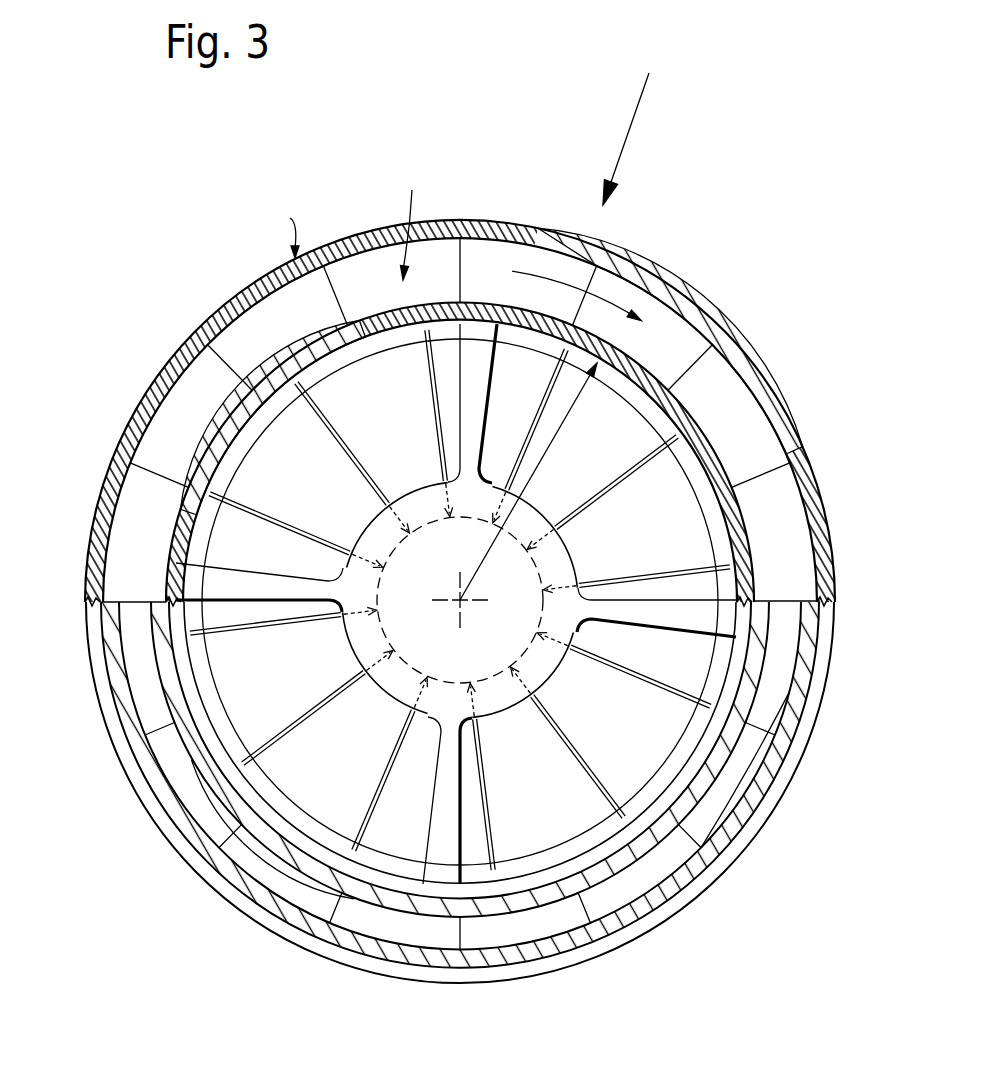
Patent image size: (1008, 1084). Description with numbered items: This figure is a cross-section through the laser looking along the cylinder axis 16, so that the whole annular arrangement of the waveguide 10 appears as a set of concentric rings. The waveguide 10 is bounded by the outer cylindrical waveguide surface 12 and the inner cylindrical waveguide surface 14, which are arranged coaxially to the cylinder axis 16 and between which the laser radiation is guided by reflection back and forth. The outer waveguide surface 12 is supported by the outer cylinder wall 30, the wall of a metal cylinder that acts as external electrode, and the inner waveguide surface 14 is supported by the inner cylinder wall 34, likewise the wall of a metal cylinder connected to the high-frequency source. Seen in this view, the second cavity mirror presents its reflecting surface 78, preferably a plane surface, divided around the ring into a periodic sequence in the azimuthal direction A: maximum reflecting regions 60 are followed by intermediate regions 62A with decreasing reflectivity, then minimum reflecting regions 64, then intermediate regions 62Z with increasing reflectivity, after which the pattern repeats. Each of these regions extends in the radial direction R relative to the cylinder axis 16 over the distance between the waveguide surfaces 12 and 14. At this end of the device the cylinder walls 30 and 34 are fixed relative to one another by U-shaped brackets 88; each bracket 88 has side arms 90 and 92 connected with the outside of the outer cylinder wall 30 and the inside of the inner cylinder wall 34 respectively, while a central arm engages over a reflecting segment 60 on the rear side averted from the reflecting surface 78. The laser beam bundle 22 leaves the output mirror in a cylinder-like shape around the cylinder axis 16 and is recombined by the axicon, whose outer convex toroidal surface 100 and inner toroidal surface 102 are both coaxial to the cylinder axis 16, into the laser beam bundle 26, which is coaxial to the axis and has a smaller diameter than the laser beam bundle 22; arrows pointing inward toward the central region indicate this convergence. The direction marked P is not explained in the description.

The waveguide 10 is at (142, 780).
The outer cylindrical waveguide surface 12 is at (307, 907).
The inner cylindrical waveguide surface 14 is at (423, 937).
The cylinder axis 16 is at (455, 595).
The laser beam bundle 22 is at (567, 737).
The laser beam bundle 26 is at (395, 703).
The outer cylinder wall 30 is at (764, 777).
The inner cylinder wall 34 is at (703, 887).
The maximum reflecting regions 60 is at (480, 252).
The intermediate regions with increasing reflectivity 62Z is at (372, 265).
The intermediate regions with decreasing reflectivity 62A is at (608, 283).
The minimum reflecting regions 64 is at (262, 318).
The reflecting surface 78 is at (414, 215).
The U-shaped brackets 88 is at (280, 226).
The side arm 90 is at (213, 325).
The side arm 92 is at (207, 470).
The outer convex toroidal surface 100 is at (703, 492).
The inner toroidal surface 102 is at (555, 565).
The azimuthal direction A is at (541, 280).
The force direction P is at (632, 139).
The radial direction R is at (547, 436).